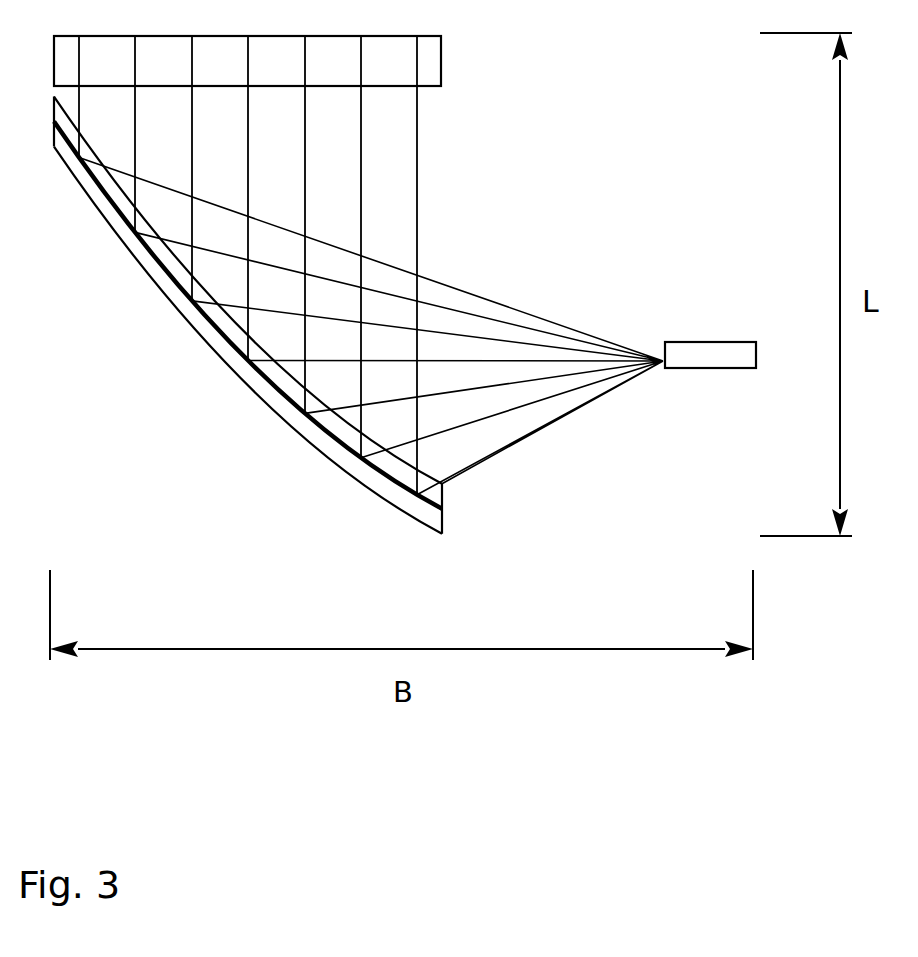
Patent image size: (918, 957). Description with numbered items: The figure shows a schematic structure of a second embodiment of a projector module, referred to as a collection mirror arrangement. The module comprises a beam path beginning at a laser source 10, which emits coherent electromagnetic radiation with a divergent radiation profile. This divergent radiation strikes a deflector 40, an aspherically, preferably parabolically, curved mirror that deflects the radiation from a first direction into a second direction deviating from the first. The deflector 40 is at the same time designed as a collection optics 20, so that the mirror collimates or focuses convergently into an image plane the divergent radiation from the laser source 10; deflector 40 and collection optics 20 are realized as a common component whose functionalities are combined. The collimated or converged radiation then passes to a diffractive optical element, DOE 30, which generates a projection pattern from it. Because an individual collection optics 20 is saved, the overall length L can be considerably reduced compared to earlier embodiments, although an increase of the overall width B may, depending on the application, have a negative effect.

The laser source 10 is at (707, 360).
The collection optics 20 is at (248, 315).
The diffractive optical element (DOE) 30 is at (433, 57).
The deflector 40 is at (303, 423).